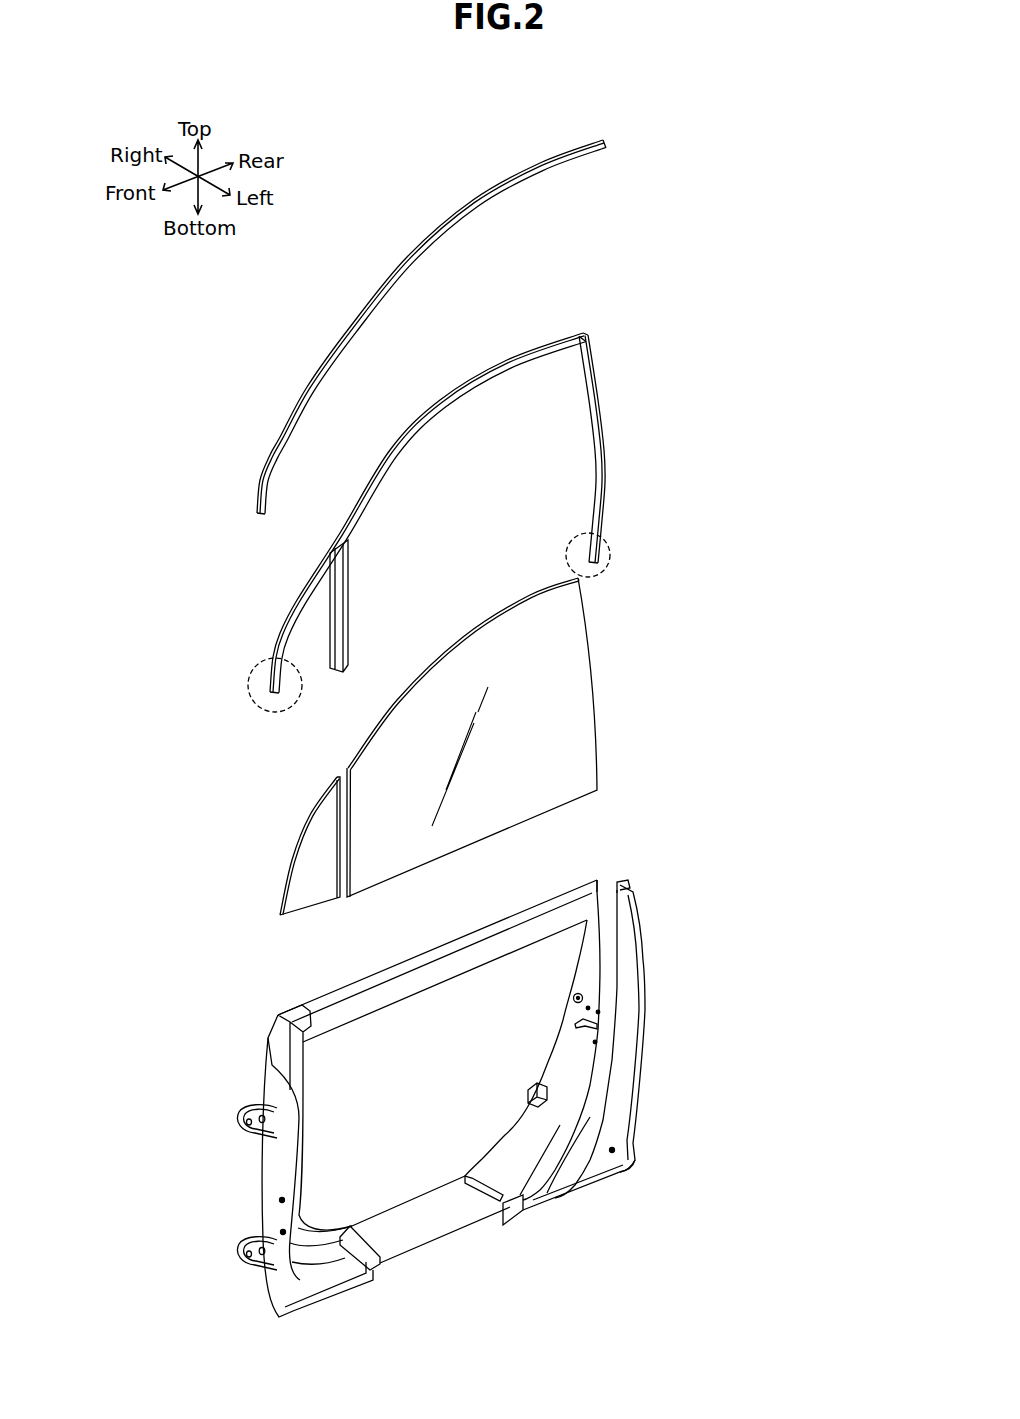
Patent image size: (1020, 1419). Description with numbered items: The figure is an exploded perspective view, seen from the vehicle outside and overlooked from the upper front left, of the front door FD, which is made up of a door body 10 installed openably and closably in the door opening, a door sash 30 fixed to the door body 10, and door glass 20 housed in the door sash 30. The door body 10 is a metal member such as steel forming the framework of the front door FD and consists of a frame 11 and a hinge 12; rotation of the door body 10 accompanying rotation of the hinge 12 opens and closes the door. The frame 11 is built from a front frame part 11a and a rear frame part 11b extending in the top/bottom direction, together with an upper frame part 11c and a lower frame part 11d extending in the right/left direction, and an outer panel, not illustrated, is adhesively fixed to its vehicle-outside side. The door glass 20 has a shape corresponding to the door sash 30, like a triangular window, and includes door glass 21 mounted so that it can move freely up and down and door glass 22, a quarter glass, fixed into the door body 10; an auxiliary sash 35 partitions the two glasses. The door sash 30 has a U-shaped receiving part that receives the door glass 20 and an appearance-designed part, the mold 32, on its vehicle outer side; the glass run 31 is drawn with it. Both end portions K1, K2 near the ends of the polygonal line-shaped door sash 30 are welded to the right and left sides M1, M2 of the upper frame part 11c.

The door body 10 is at (457, 1066).
The frame 11 is at (464, 1097).
The front frame part 11a is at (262, 1188).
The rear frame part 11b is at (660, 1009).
The upper frame part 11c is at (455, 955).
The lower frame part 11d is at (432, 1225).
The hinge 12 is at (238, 1255).
The door glass 20 is at (465, 746).
The door glass 21 is at (572, 666).
The door glass (quarter glass) 22 is at (317, 850).
The door sash 30 is at (773, 110).
The glass run 31 is at (612, 447).
The mold 32 is at (615, 145).
The auxiliary sash 35 is at (350, 613).
The end portion K1 is at (254, 706).
The end portion K2 is at (611, 549).
The side of the upper frame member M1 is at (297, 1012).
The side of the upper frame member M2 is at (602, 890).
The front door FD is at (762, 870).